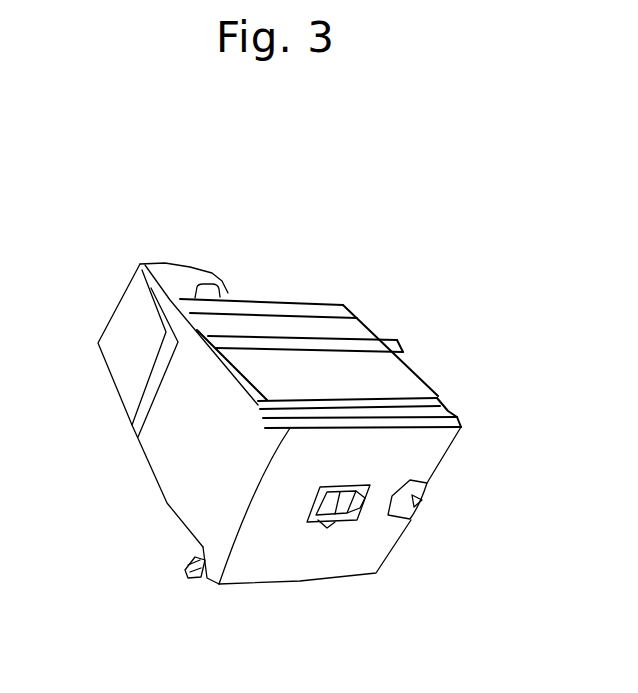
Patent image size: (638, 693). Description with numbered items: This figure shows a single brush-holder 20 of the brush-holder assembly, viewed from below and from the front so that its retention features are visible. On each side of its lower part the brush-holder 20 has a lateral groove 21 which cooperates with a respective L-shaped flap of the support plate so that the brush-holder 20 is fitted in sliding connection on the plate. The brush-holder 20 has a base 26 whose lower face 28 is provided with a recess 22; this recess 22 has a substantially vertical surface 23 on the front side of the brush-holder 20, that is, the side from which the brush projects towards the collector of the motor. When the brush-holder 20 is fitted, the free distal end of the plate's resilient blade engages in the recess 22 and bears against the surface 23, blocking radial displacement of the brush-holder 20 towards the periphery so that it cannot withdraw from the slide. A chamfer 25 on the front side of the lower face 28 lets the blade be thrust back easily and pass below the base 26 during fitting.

The brush-holder 20 is at (168, 455).
The lateral groove 21 is at (413, 393).
The recess 22 is at (328, 527).
The substantially vertical surface 23 is at (362, 503).
The chamfer 25 is at (425, 500).
The base 26 is at (213, 523).
The lower face 28 is at (257, 555).